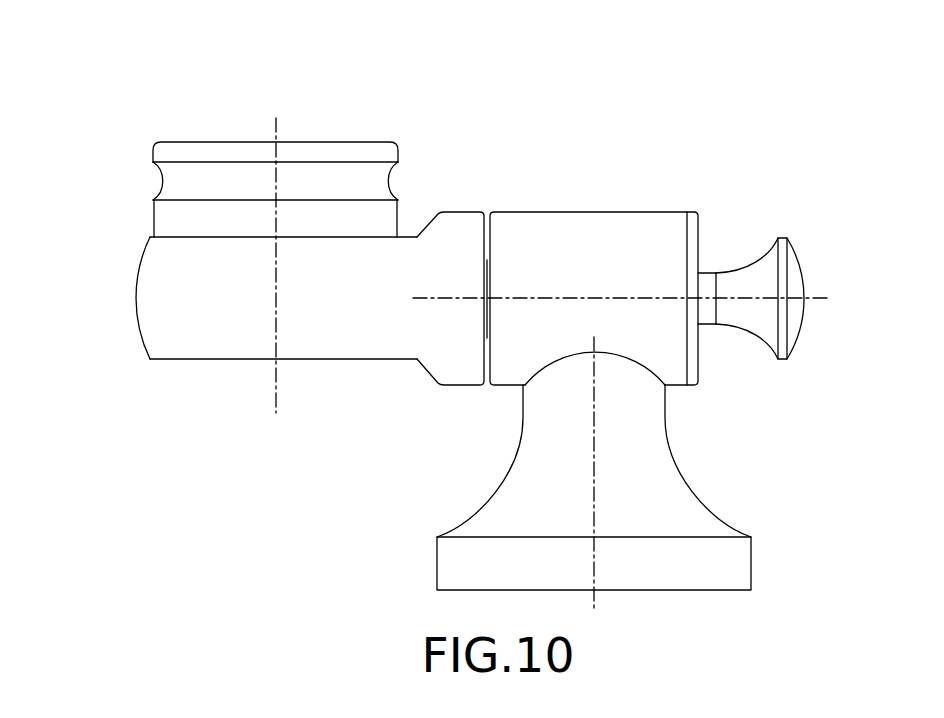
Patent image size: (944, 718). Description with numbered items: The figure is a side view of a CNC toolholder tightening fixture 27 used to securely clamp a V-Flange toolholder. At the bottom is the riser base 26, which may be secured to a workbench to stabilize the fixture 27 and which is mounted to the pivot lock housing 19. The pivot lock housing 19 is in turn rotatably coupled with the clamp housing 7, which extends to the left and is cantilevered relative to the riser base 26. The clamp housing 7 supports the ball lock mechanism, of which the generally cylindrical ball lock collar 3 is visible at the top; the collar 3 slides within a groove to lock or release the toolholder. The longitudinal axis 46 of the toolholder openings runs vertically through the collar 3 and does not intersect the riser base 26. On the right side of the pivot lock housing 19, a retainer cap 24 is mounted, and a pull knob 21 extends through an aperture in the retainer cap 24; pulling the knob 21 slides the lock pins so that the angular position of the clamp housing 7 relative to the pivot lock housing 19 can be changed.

The toolholder tightening fixture 27 is at (103, 82).
The ball lock collar 3 is at (342, 153).
The longitudinal axis 46 is at (275, 388).
The clamp housing 7 is at (457, 230).
The pivot lock housing 19 is at (644, 232).
The retainer cap 24 is at (692, 222).
The pull knob 21 is at (780, 247).
The riser base 26 is at (665, 505).